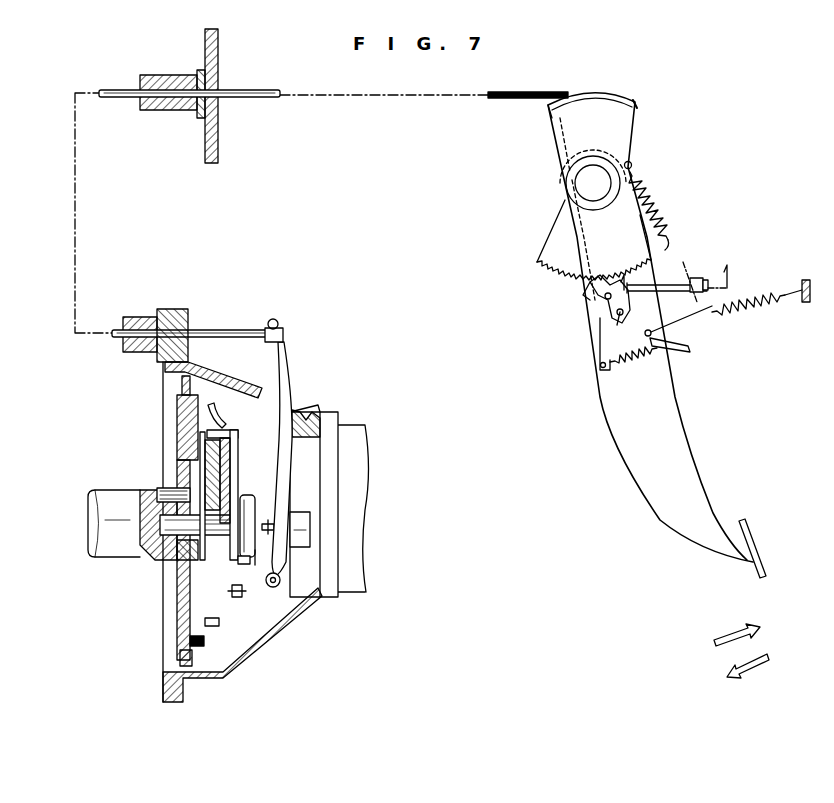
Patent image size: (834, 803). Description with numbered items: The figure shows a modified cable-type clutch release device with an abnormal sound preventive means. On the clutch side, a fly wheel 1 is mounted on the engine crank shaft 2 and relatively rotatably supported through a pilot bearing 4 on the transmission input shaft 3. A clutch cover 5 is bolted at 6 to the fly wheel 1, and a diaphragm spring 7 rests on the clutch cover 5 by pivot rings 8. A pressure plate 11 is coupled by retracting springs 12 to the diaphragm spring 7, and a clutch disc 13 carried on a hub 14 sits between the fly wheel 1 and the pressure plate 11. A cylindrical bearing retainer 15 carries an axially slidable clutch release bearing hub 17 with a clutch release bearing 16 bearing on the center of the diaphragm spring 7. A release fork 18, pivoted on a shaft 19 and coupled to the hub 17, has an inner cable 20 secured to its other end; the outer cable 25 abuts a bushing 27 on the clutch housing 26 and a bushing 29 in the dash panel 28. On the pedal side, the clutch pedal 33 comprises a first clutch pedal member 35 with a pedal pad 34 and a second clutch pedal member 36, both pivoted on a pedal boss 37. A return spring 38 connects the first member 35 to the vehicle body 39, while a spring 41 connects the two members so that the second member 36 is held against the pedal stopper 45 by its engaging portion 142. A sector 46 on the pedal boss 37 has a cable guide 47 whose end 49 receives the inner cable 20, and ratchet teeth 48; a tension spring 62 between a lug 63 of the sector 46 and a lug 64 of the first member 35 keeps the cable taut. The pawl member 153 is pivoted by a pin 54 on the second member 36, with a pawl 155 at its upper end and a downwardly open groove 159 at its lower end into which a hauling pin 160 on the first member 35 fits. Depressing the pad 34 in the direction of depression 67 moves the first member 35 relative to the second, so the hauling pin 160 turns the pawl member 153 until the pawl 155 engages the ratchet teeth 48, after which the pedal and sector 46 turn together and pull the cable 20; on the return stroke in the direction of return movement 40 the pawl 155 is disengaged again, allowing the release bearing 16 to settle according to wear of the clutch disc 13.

The fly wheel 1 is at (177, 406).
The crank shaft 2 is at (116, 500).
The input shaft 3 is at (178, 570).
The pilot bearing 4 is at (152, 556).
The clutch cover 5 is at (219, 624).
The bolt 6 is at (205, 642).
The diaphragm spring 7 is at (240, 460).
The pivot rings 8 is at (244, 593).
The pressure plate 11 is at (223, 427).
The retracting springs 12 is at (233, 433).
The clutch disc 13 is at (177, 443).
The hub 14 is at (241, 496).
The bearing retainer 15 is at (304, 518).
The clutch release bearing 16 is at (262, 522).
The clutch release bearing hub 17 is at (256, 560).
The release fork 18 is at (290, 372).
The shaft 19 is at (278, 580).
The inner cable 20 is at (120, 92).
The outer cable 25 is at (158, 112).
The clutch housing 26 is at (243, 381).
The bushing 27 is at (160, 353).
The dash panel 28 is at (218, 140).
The bushing 29 is at (200, 117).
The clutch pedal 33 is at (702, 466).
The pedal pad 34 is at (765, 538).
The first clutch pedal member 35 is at (640, 472).
The second clutch pedal member 36 is at (630, 284).
The pedal boss 37 is at (585, 160).
The return spring 38 is at (750, 309).
The vehicle body 39 is at (688, 272).
The direction of return movement 40 is at (738, 632).
The spring 41 is at (632, 363).
The pedal stopper 45 is at (654, 246).
The sector 46 is at (628, 143).
The cable guide 47 is at (550, 112).
The ratchet teeth 48 is at (552, 270).
The end of cable guide 49 is at (638, 106).
The pin 54 is at (605, 282).
The tension spring 62 is at (656, 218).
The lug 63 is at (633, 166).
The lug 64 is at (672, 350).
The direction of depression 67 is at (765, 670).
The engaging portion 142 is at (668, 305).
The pawl member 153 is at (600, 315).
The pawl 155 is at (590, 298).
The groove 159 is at (598, 345).
The hauling pin 160 is at (618, 325).